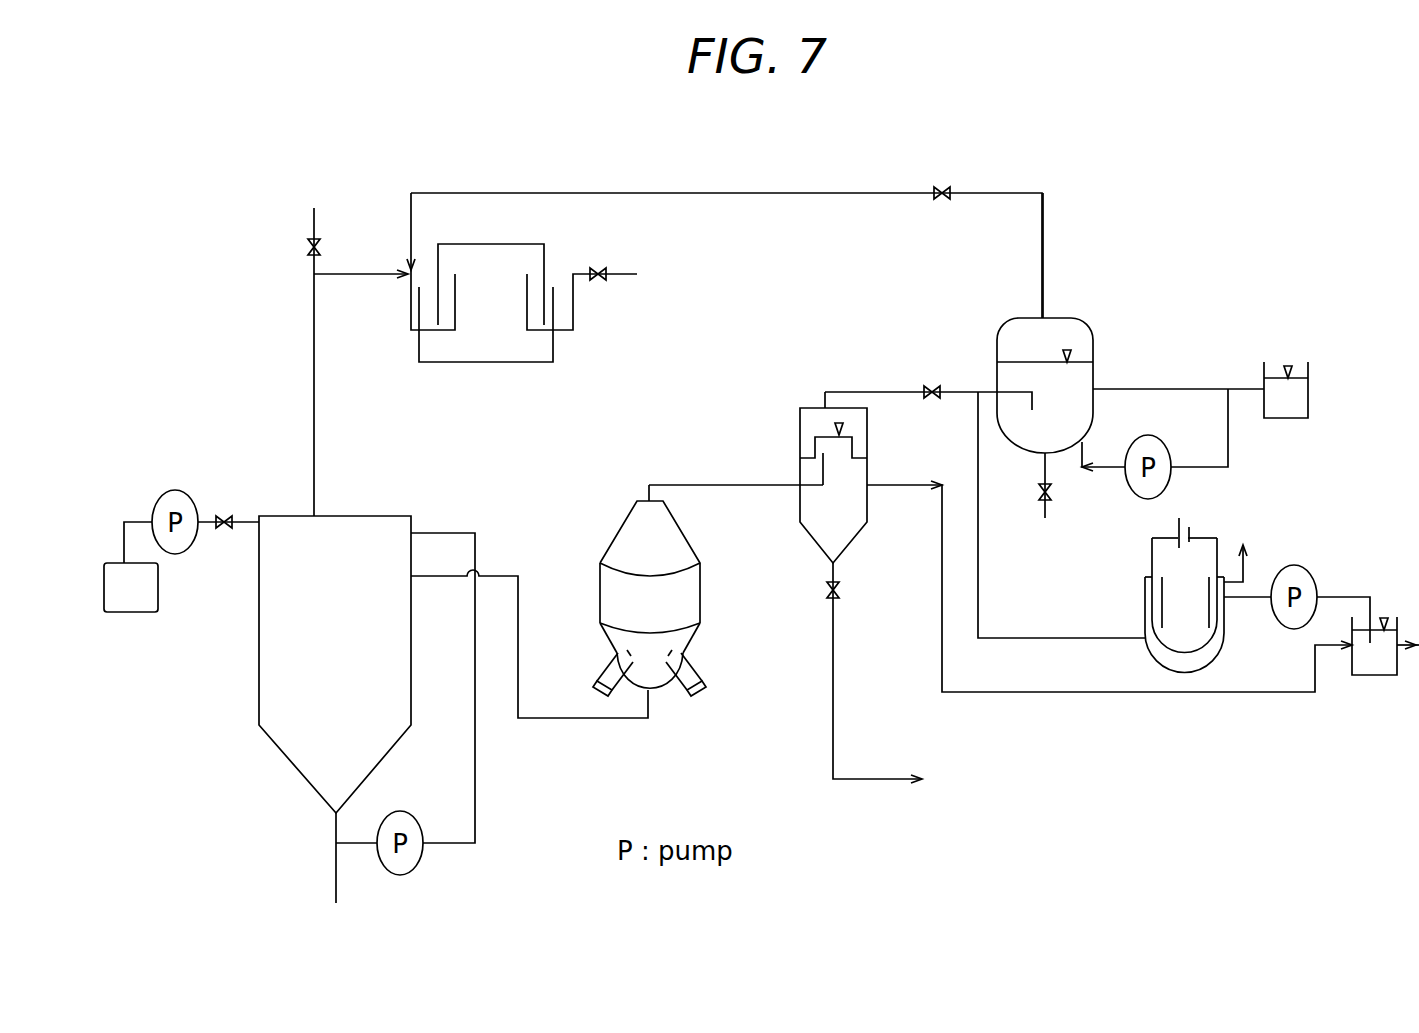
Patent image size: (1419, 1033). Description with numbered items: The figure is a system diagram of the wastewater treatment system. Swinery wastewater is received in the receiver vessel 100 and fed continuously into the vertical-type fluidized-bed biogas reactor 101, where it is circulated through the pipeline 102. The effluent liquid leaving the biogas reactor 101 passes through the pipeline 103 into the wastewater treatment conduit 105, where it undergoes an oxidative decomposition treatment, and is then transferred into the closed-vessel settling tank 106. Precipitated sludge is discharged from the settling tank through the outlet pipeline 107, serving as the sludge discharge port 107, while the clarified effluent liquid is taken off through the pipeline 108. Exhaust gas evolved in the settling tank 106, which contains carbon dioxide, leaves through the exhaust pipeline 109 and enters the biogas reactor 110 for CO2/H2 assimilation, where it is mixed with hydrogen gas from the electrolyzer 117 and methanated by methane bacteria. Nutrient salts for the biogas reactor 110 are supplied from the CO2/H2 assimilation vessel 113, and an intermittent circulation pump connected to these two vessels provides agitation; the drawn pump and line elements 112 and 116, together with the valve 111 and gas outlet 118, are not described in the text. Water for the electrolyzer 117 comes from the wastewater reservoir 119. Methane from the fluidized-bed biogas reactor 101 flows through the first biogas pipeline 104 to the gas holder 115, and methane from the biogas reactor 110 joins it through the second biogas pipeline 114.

The receiver vessel 100 is at (181, 551).
The vertical-type fluidized-bed biogas reactor 101 is at (335, 709).
The pipeline 102 is at (406, 687).
The pipeline 103 is at (529, 663).
The first biogas pipeline 104 is at (358, 362).
The wastewater treatment conduit 105 is at (649, 590).
The closed-vessel settling tank 106 is at (758, 477).
The outlet pipeline 107 is at (874, 673).
The pipeline 108 is at (1109, 586).
The exhaust pipeline 109 is at (928, 386).
The biogas reactor 110 is at (1130, 323).
The drain line 111 is at (1063, 503).
The pump 112 is at (1155, 444).
The CO2/H2 assimilation vessel 113 is at (1292, 372).
The second biogas pipeline 114 is at (726, 237).
The gas holder 115 is at (522, 277).
The supply line 116 is at (1061, 515).
The electrolyzer 117 is at (1184, 595).
The gas outlet 118 is at (1254, 543).
The wastewater reservoir 119 is at (1321, 620).